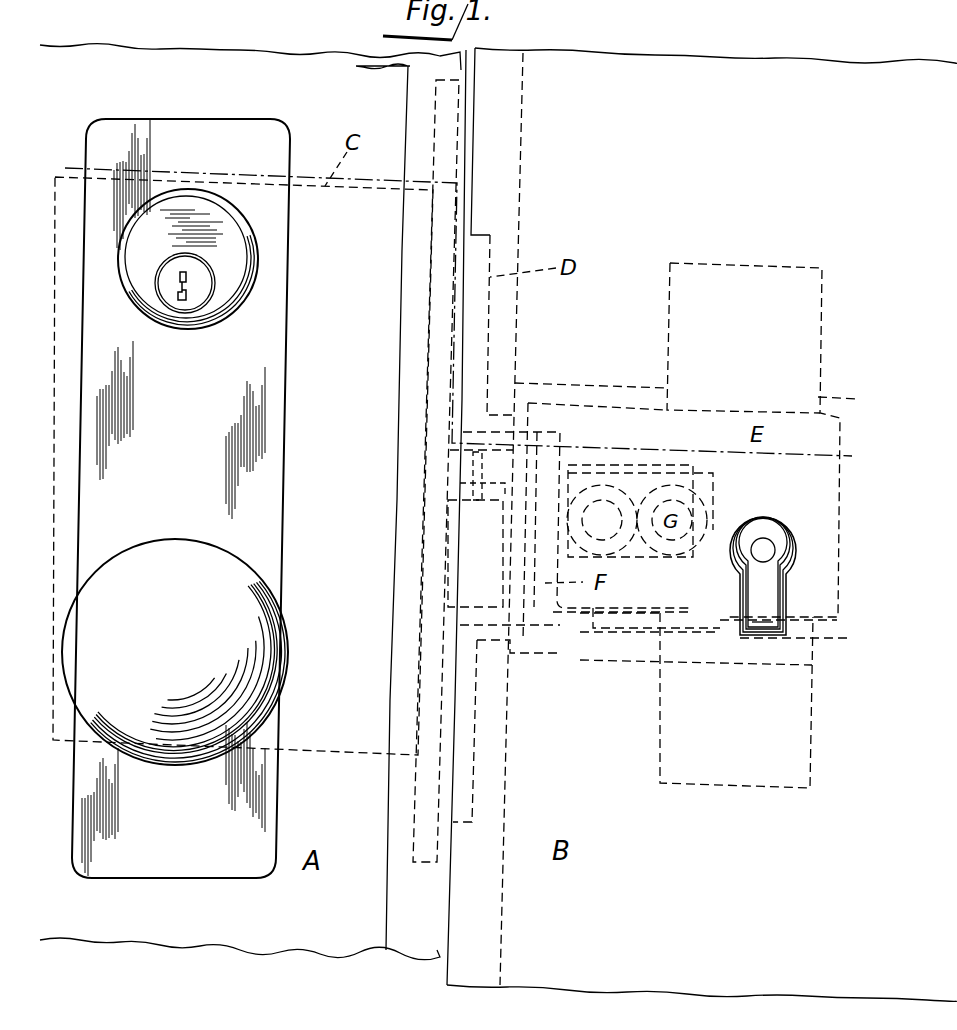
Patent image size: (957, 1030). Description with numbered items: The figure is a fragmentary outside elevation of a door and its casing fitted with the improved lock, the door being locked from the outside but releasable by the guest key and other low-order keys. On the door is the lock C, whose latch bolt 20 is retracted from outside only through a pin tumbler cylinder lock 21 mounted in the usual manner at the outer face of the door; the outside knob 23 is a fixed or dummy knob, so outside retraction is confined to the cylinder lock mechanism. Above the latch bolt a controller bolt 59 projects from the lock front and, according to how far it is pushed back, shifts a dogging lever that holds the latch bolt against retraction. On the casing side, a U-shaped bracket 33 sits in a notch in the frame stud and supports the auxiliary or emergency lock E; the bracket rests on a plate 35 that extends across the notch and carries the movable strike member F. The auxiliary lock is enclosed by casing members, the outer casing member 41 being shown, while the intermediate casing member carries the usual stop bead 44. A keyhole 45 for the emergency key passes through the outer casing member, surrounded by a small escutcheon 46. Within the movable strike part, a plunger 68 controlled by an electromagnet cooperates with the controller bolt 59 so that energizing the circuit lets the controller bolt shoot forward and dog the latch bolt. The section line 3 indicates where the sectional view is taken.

The section line 3- 3 is at (74, 164).
The latch bolt 20 is at (482, 554).
The pin tumbler cylinder lock 21 is at (228, 262).
The knob 23 is at (175, 652).
The U-shaped bracket 33 is at (675, 692).
The plate 35 is at (565, 642).
The outer casing member 41 is at (529, 519).
The stop bead 44 is at (405, 642).
The keyhole 45 is at (765, 575).
The escutcheon 46 is at (770, 518).
The controller bolt 59 is at (452, 460).
The plunger 68 is at (463, 487).